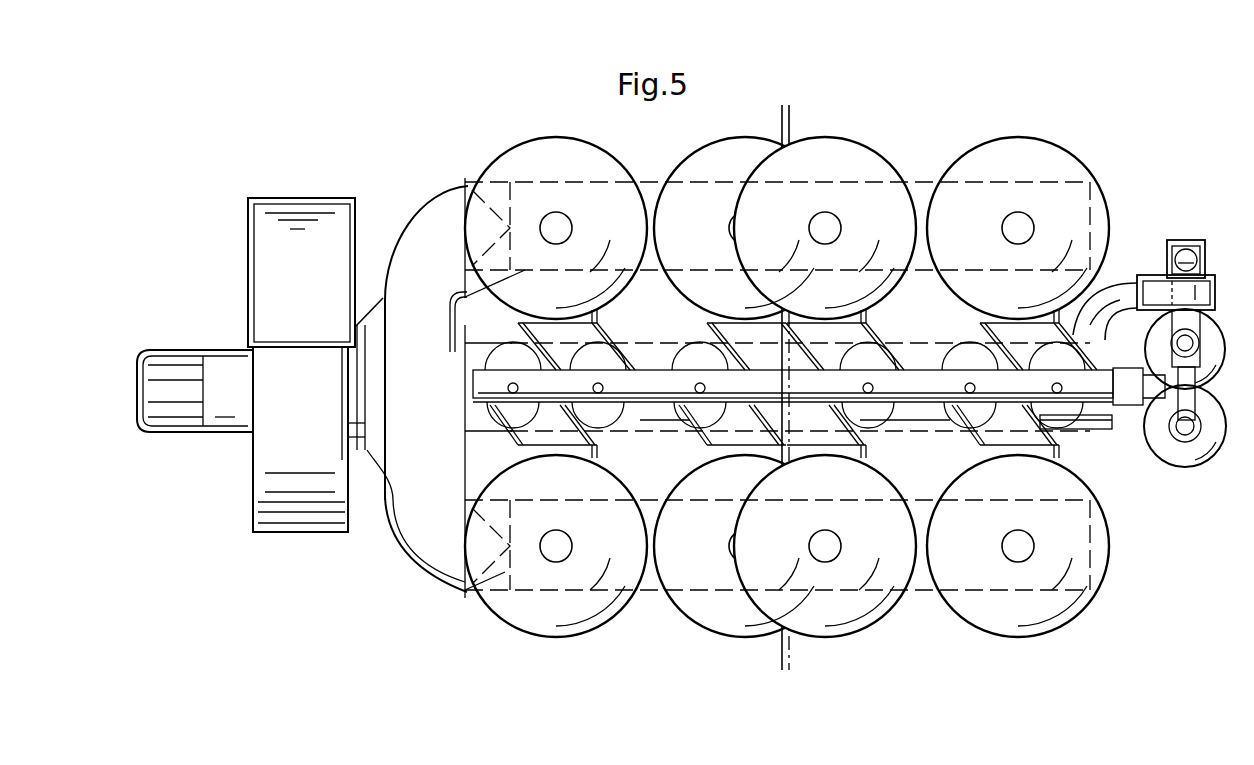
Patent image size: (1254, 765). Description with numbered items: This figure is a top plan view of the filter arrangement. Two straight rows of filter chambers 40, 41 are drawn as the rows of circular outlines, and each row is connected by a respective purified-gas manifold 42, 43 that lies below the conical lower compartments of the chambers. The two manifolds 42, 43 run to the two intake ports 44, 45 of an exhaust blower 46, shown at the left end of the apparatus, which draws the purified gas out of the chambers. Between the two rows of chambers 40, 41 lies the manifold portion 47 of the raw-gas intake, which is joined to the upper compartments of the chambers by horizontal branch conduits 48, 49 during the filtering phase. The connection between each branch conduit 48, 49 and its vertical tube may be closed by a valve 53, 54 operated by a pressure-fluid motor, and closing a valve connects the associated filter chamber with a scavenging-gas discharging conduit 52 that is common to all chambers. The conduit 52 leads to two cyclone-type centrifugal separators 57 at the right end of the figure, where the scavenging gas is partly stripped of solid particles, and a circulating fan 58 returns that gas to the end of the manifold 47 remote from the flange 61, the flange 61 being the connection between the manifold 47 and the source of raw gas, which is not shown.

The filter chambers 40 is at (803, 128).
The filter chambers 41 is at (800, 636).
The purified-gas manifold 42 is at (912, 182).
The purified-gas manifold 43 is at (910, 590).
The intake port 44 is at (450, 205).
The intake port 45 is at (422, 556).
The exhaust blower 46 is at (292, 212).
The manifold portion 47 is at (920, 426).
The branch conduit 48 is at (865, 350).
The branch conduit 49 is at (700, 430).
The scavenging-gas discharging conduit 52 is at (1112, 406).
The valve 53 is at (608, 356).
The valve 54 is at (510, 388).
The centrifugal separators 57 is at (1212, 360).
The circulating fan 58 is at (1214, 292).
The flange 61 is at (452, 362).